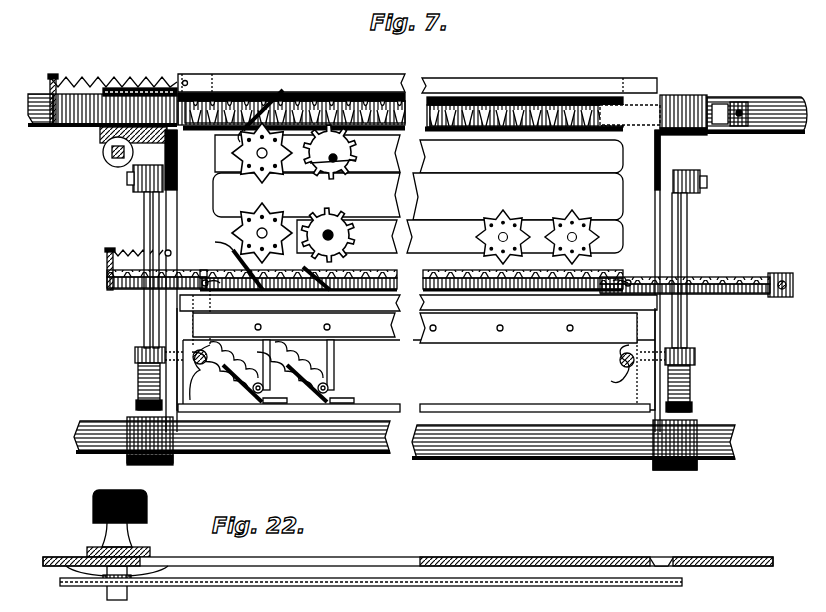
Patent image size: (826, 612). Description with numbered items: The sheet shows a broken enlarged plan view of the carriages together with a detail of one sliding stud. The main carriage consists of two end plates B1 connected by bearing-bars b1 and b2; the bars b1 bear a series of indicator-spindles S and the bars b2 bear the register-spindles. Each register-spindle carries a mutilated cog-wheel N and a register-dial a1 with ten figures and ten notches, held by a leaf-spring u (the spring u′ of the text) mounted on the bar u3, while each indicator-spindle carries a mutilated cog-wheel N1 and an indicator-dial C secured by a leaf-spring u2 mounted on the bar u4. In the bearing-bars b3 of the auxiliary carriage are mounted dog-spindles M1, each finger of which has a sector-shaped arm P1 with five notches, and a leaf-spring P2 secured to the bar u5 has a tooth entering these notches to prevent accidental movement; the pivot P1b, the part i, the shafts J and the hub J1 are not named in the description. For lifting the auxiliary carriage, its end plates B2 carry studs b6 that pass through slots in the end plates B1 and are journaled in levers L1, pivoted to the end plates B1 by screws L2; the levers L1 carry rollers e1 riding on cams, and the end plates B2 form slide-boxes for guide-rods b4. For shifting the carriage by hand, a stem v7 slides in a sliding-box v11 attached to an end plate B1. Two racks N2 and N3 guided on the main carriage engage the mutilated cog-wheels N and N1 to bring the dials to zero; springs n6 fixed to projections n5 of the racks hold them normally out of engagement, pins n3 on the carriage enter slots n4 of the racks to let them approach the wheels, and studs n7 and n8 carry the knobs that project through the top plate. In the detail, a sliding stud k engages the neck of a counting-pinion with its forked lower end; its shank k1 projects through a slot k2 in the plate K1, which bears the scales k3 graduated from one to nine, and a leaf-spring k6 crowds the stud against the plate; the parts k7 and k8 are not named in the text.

In FIG. 7, the shaft J is at (45, 127).
In FIG. 7, the spring n6 is at (122, 77).
In FIG. 7, the projection n5 is at (53, 76).
In FIG. 7, the bar u4 is at (350, 75).
In FIG. 7, the pin n3 is at (206, 122).
In FIG. 7, the slot n4 is at (192, 106).
In FIG. 7, the rack N3 is at (740, 106).
In FIG. 7, the stud n8 is at (731, 130).
In FIG. 7, the leaf-spring u2 is at (263, 95).
In FIG. 7, the lever u is at (232, 250).
In FIG. 7, the sliding-box v11 is at (103, 152).
In FIG. 7, the stem v7 is at (112, 158).
In FIG. 7, the screw L2 is at (128, 181).
In FIG. 7, the lever L1 is at (146, 211).
In FIG. 7, the stud b6 is at (136, 355).
In FIG. 7, the roller e1 is at (138, 405).
In FIG. 7, the end plate B1 is at (165, 318).
In FIG. 7, the end plate B2 is at (183, 383).
In FIG. 7, the indicator-dial C is at (247, 172).
In FIG. 7, the indicator-spindle S is at (330, 152).
In FIG. 7, the mutilated cog-wheel N is at (346, 220).
In FIG. 7, the shaft hub J1 is at (334, 235).
In FIG. 7, the mutilated cog-wheel N1 is at (352, 153).
In FIG. 7, the register-dial a1 is at (275, 214).
In FIG. 7, the bearing-bar b1 is at (406, 181).
In FIG. 7, the bearing-bar b2 is at (402, 265).
In FIG. 7, the bearing-bar b3 is at (396, 345).
In FIG. 7, the dog-spindle M1 is at (262, 327).
In FIG. 7, the bar u3 is at (550, 311).
In FIG. 7, the bar u5 is at (371, 405).
In FIG. 7, the sector-shaped arm P1 is at (326, 357).
In FIG. 7, the leaf-spring P2 is at (316, 390).
In FIG. 7, the pawl pivot P1b is at (252, 391).
In FIG. 7, the pivot i is at (330, 388).
In FIG. 7, the guide-rod b4 is at (203, 366).
In FIG. 7, the rack N2 is at (770, 299).
In FIG. 7, the stud n7 is at (781, 281).
In FIG. 22, the sliding stud k is at (148, 519).
In FIG. 22, the slot k2 is at (359, 560).
In FIG. 22, the plate K1 is at (515, 560).
In FIG. 22, the scale k3 is at (660, 561).
In FIG. 22, the leaf-spring k6 is at (80, 572).
In FIG. 22, the lower plate k7 is at (309, 584).
In FIG. 22, the lower plate part k8 is at (434, 590).
In FIG. 22, the shank k1 is at (118, 598).